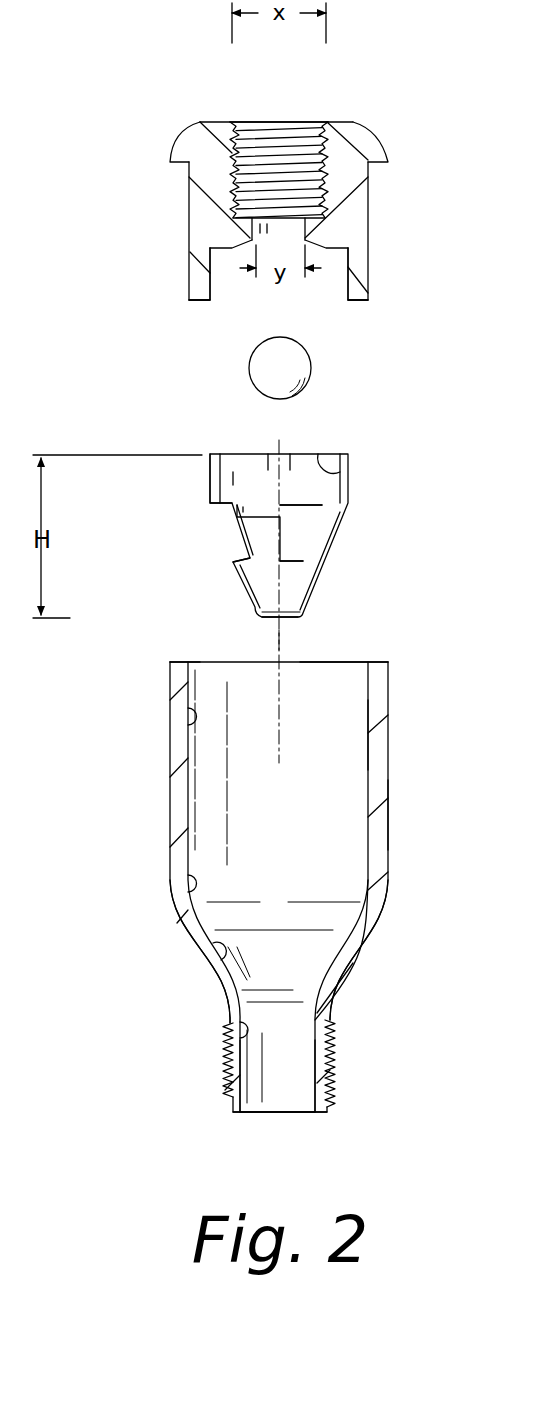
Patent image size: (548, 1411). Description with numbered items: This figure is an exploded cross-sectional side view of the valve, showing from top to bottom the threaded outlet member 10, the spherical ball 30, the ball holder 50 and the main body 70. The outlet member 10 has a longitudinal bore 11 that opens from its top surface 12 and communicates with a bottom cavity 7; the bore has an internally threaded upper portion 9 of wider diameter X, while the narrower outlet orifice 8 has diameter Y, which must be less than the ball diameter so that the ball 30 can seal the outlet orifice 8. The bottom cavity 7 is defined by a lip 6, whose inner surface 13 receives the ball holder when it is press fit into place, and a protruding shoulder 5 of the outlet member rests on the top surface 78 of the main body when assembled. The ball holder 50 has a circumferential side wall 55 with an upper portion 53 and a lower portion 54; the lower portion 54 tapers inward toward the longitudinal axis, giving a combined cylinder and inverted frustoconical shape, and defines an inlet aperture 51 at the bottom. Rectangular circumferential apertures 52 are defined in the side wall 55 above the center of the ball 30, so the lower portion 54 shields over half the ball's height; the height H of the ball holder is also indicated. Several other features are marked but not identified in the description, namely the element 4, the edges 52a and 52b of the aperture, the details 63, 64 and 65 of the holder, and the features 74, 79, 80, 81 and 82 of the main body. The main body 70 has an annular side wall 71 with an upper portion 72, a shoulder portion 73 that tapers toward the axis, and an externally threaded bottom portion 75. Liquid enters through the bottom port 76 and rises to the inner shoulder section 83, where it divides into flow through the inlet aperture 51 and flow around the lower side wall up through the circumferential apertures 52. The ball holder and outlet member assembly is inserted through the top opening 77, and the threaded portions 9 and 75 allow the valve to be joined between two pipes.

The ball seat 4 is at (232, 252).
The protruding shoulder 5 is at (380, 153).
The lip 6 is at (363, 258).
The bottom cavity 7 is at (302, 288).
The outlet orifice 8 is at (299, 231).
The internally threaded upper portion 9 is at (330, 120).
The outlet member 10 is at (182, 234).
The longitudinal bore 11 is at (272, 123).
The top surface 12 is at (217, 115).
The inner surface 13 is at (212, 290).
The spherical ball 30 is at (247, 372).
The ball holder 50 is at (228, 568).
The inlet aperture 51 is at (290, 620).
The circumferential apertures 52 is at (302, 537).
The slot upper edge 52a is at (308, 507).
The slot lower edge 52b is at (300, 560).
The upper portion 53 is at (347, 490).
The lower portion 54 is at (327, 577).
The circumferential side wall 55 is at (210, 472).
The groove 63 is at (323, 448).
The side slot 64 is at (257, 602).
The insert bore 65 is at (268, 452).
The main body 70 is at (170, 843).
The annular side wall 71 is at (382, 802).
The upper portion 72 is at (380, 733).
The shoulder portion 73 is at (353, 963).
The external threads 74 is at (333, 1088).
The externally threaded bottom portion 75 is at (223, 1073).
The bottom port 76 is at (288, 1080).
The top opening 77 is at (347, 677).
The top surface 78 is at (180, 660).
The shoulder 79 is at (200, 887).
The upper rib 80 is at (197, 722).
The middle rib 81 is at (220, 962).
The lower rib 82 is at (253, 1038).
The inner shoulder section 83 is at (360, 903).